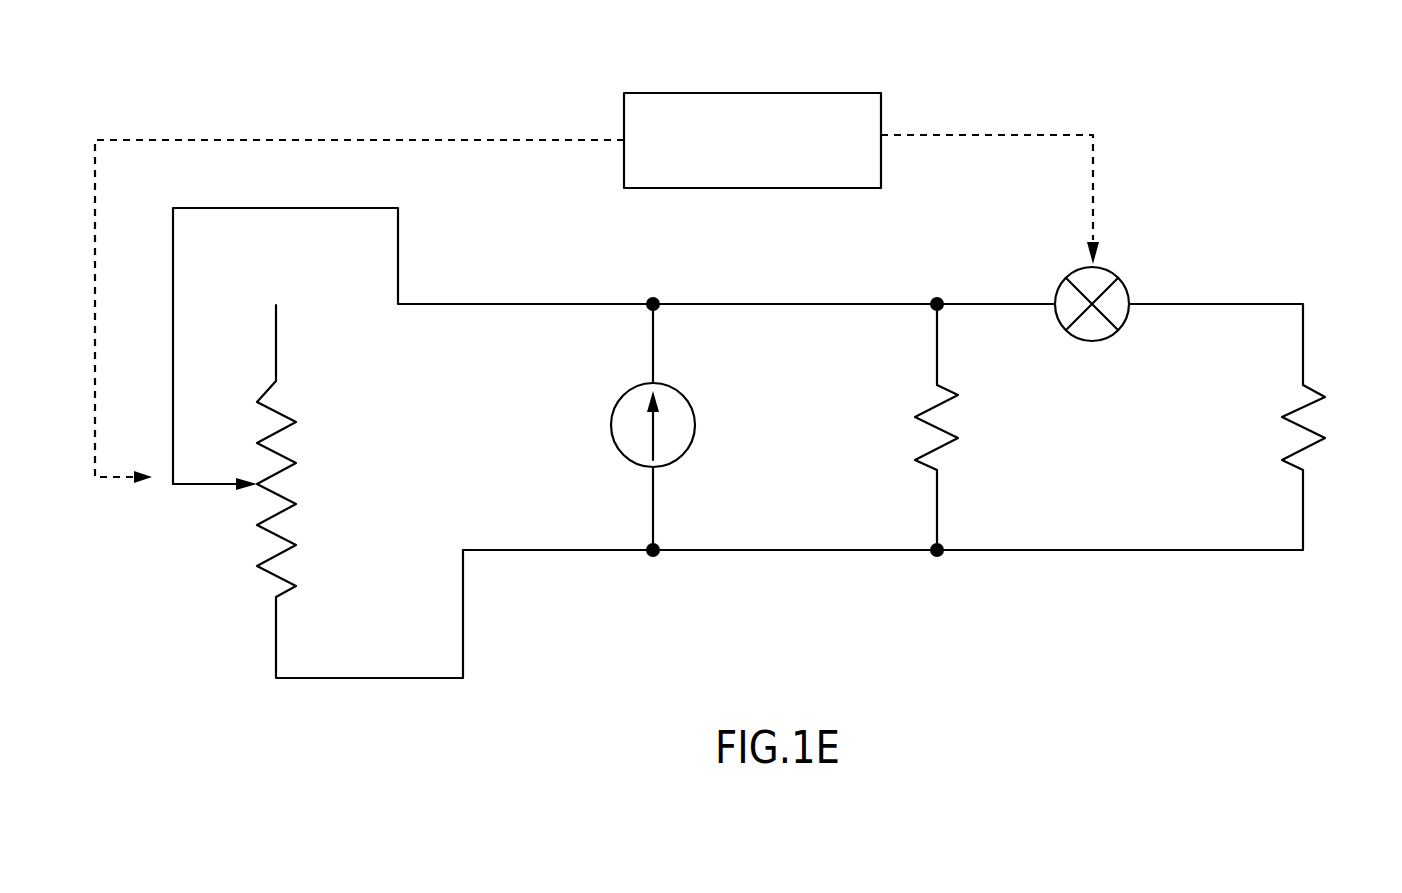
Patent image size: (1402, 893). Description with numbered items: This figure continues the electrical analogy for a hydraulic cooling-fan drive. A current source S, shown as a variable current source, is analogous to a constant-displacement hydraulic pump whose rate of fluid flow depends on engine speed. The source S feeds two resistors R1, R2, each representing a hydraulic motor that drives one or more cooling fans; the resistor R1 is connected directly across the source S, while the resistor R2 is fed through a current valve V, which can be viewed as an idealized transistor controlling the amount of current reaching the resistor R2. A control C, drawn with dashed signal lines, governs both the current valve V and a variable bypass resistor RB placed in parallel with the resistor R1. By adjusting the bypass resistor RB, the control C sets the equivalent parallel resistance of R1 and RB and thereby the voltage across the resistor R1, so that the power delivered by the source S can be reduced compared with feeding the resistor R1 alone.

The control C is at (881, 112).
The current valve V is at (1121, 283).
The variable bypass resistor RB is at (280, 472).
The current source S is at (612, 415).
The resistor R1 is at (941, 450).
The resistor R2 is at (1306, 450).